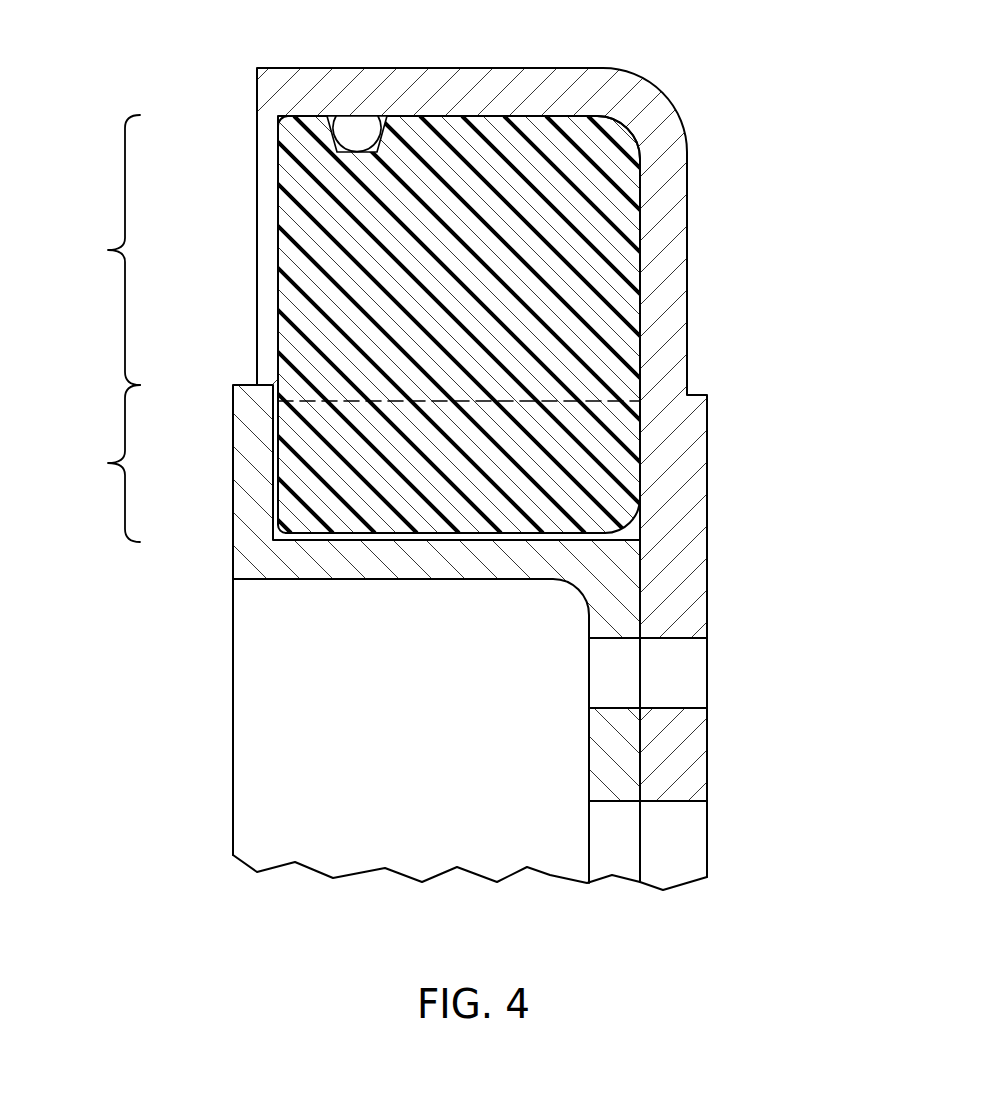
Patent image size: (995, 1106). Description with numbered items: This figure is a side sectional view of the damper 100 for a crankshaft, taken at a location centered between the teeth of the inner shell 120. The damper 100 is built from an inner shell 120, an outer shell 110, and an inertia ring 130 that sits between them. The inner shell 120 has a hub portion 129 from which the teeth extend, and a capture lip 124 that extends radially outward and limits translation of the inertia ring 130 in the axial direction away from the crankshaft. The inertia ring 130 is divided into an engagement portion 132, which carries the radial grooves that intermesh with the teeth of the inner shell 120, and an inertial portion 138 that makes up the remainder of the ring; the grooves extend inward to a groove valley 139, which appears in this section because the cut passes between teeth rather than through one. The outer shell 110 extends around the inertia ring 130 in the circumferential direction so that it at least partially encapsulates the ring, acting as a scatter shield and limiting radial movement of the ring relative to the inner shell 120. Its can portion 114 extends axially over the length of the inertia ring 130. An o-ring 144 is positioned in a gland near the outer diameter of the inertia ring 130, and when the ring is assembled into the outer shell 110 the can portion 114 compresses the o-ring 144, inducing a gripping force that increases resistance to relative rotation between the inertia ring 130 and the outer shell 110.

The damper 100 is at (757, 55).
The outer shell 110 is at (694, 209).
The can portion 114 is at (540, 68).
The inner shell 120 is at (357, 586).
The capture lip 124 is at (233, 460).
The hub portion 129 is at (510, 533).
The inertia ring 130 is at (258, 250).
The engagement portion 132 is at (99, 463).
The inertial portion 138 is at (99, 250).
The groove valley 139 is at (468, 400).
The o-ring 144 is at (359, 132).